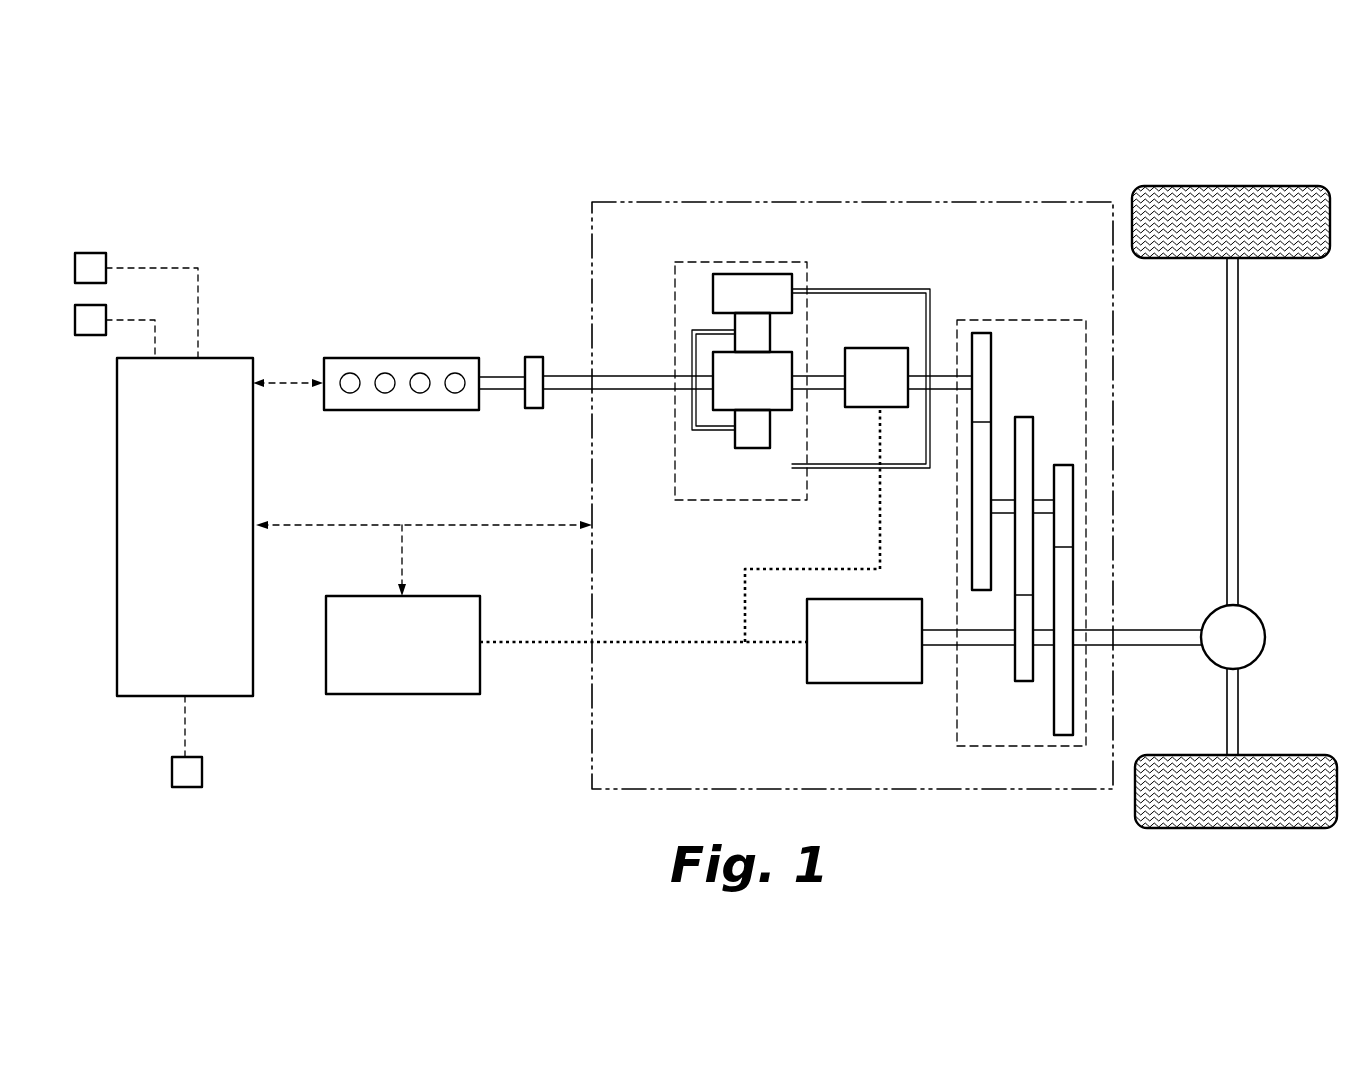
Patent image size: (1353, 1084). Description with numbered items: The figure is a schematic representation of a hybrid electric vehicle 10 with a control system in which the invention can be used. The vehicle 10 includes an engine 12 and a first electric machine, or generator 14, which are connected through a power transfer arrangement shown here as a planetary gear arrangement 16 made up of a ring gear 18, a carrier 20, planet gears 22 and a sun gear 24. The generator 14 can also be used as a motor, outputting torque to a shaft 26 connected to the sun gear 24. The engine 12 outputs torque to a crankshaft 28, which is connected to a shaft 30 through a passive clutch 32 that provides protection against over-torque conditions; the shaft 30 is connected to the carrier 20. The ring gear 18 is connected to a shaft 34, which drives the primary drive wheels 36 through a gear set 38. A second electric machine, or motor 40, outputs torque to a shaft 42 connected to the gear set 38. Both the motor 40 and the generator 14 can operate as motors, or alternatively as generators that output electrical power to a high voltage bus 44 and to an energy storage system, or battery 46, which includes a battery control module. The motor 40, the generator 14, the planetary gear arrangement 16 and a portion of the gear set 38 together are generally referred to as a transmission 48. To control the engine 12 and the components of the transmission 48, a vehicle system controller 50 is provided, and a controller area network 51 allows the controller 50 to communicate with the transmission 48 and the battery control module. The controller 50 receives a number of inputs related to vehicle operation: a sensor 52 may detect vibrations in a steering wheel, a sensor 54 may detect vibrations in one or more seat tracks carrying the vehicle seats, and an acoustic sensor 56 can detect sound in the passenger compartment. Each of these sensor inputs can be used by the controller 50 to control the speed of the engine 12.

The vehicle 10 is at (1068, 150).
The engine 12 is at (370, 358).
The generator 14 is at (873, 348).
The planetary gear arrangement 16 is at (768, 359).
The ring gear 18 is at (713, 290).
The carrier 20 is at (692, 350).
The planet gears 22 is at (735, 325).
The sun gear 24 is at (792, 404).
The shaft 26 is at (824, 374).
The crankshaft 28 is at (511, 392).
The shaft 30 is at (571, 392).
The passive clutch 32 is at (534, 357).
The shaft 34 is at (945, 372).
The primary drive wheels 36 is at (1267, 260).
The gear set 38 is at (1032, 746).
The motor 40 is at (868, 683).
The shaft 42 is at (946, 630).
The high voltage bus 44 is at (686, 640).
The battery 46 is at (326, 637).
The transmission 48 is at (590, 244).
The vehicle system controller 50 is at (211, 358).
The controller area network 51 is at (345, 524).
The sensor 52 is at (94, 335).
The sensor 54 is at (90, 253).
The acoustic sensor 56 is at (186, 787).